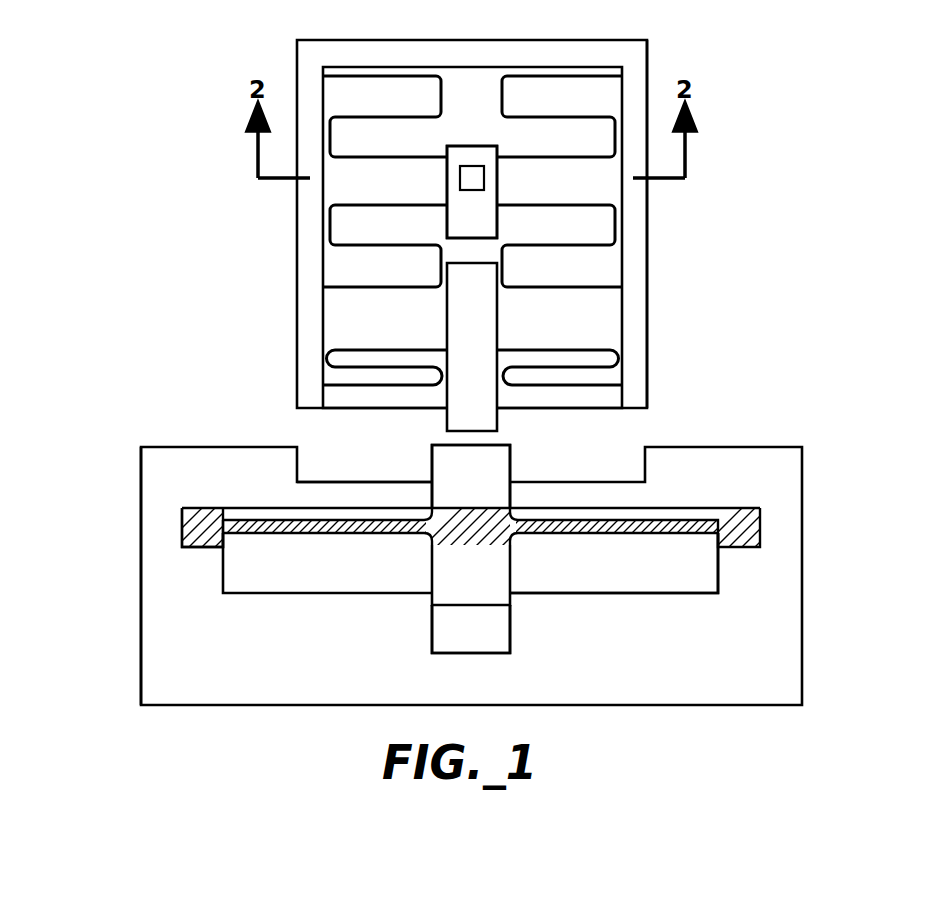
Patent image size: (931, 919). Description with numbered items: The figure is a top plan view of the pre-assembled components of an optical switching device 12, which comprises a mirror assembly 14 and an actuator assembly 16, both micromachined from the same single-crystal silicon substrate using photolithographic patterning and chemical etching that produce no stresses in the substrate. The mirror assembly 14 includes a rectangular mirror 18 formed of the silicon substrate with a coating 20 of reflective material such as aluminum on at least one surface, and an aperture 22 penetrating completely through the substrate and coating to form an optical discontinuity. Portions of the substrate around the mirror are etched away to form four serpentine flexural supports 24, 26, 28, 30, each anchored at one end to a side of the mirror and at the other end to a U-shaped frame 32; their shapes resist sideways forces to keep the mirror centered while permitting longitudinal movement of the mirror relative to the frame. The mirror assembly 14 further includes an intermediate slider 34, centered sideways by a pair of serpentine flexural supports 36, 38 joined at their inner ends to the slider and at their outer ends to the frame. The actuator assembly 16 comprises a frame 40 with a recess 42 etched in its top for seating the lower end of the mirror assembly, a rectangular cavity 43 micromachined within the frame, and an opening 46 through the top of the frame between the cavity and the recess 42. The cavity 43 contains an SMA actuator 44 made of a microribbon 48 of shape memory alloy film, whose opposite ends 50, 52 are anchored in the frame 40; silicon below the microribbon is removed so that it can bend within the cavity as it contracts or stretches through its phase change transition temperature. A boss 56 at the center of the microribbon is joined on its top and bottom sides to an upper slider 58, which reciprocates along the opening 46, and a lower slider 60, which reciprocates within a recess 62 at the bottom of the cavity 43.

The optical switching device 12 is at (735, 182).
The mirror assembly 14 is at (296, 284).
The actuator assembly 16 is at (141, 514).
The rectangular mirror 18 is at (465, 146).
The coating 20 is at (485, 153).
The aperture 22 is at (462, 192).
The flexural support 24 is at (370, 75).
The flexural support 26 is at (588, 75).
The flexural support 28 is at (352, 288).
The flexural support 30 is at (593, 288).
The U-shaped frame 32 is at (648, 197).
The intermediate slider 34 is at (443, 420).
The flexural support 36 is at (350, 387).
The flexural support 38 is at (590, 387).
The frame 40 is at (141, 625).
The recess 42 is at (368, 480).
The rectangular cavity 43 is at (310, 593).
The SMA actuator 44 is at (660, 535).
The opening 46 is at (510, 493).
The microribbon 48 is at (588, 535).
The end of microribbon 50 is at (195, 547).
The end of microribbon 52 is at (760, 527).
The boss 56 is at (482, 548).
The upper slider 58 is at (500, 444).
The lower slider 60 is at (455, 608).
The recess 62 is at (510, 623).